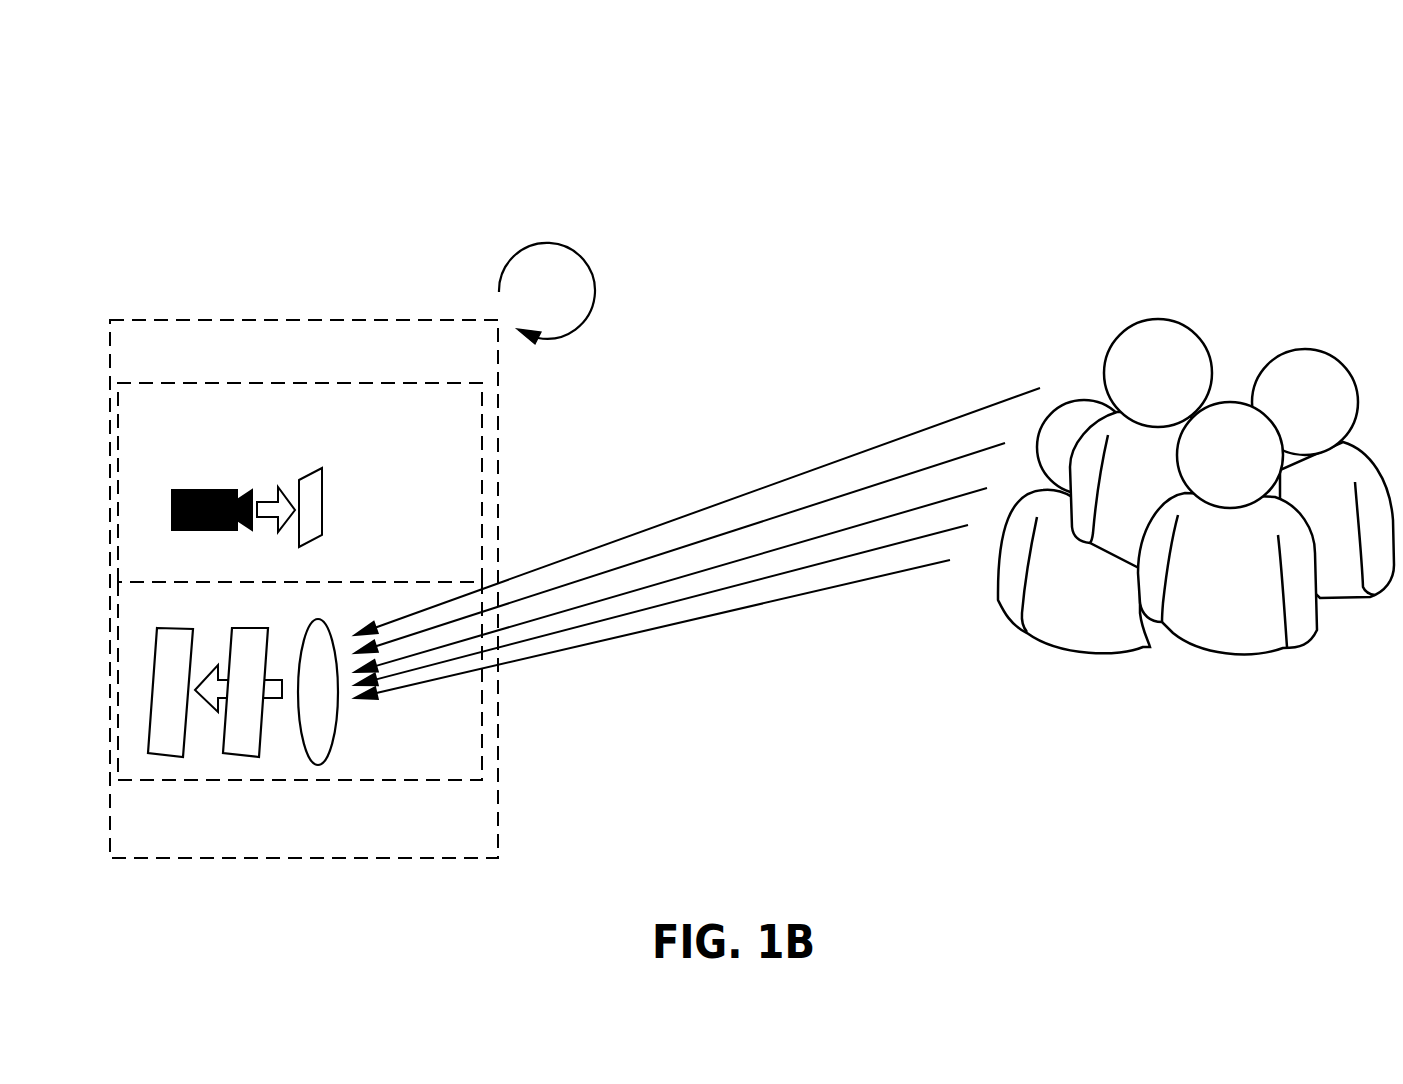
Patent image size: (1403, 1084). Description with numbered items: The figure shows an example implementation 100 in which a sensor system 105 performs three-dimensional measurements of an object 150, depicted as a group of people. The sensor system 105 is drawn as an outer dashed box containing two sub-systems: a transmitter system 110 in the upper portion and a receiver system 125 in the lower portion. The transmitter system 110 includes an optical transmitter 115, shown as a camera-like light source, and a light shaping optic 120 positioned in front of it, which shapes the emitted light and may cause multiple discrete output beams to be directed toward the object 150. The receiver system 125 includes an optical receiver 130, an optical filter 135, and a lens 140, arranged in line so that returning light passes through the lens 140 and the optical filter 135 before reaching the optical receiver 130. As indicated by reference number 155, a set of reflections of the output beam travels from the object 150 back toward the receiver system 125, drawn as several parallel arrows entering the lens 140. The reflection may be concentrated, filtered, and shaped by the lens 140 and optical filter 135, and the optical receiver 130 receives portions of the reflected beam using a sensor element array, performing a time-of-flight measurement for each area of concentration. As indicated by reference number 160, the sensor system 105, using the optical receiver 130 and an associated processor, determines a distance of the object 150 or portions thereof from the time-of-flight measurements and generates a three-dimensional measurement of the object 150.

The example implementation 100 is at (228, 69).
The sensor system 105 is at (320, 291).
The transmitter system 110 is at (351, 367).
The optical transmitter 115 is at (220, 467).
The light shaping optic 120 is at (330, 452).
The receiver system 125 is at (337, 802).
The optical receiver 130 is at (195, 616).
The optical filter 135 is at (275, 616).
The lens 140 is at (340, 612).
The object 150 is at (1222, 284).
The reflection of the output beam 155 is at (592, 696).
The determination of three-dimensional measurements 160 is at (787, 224).